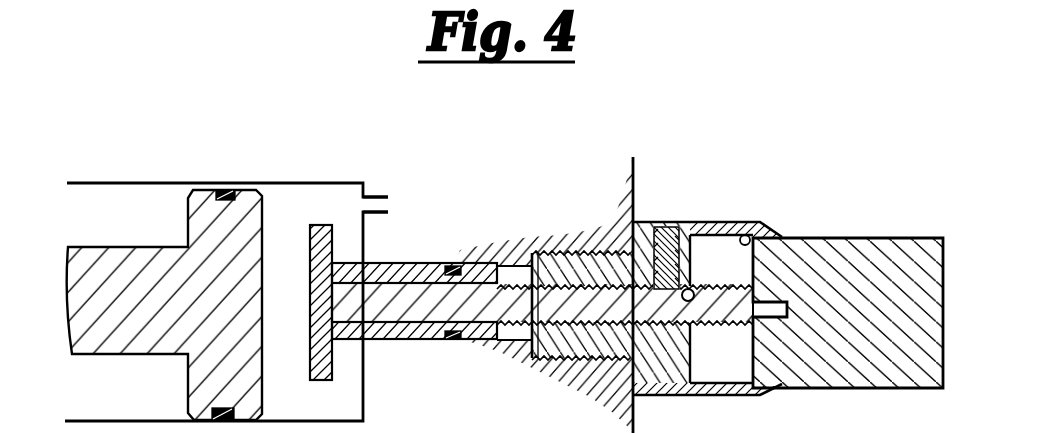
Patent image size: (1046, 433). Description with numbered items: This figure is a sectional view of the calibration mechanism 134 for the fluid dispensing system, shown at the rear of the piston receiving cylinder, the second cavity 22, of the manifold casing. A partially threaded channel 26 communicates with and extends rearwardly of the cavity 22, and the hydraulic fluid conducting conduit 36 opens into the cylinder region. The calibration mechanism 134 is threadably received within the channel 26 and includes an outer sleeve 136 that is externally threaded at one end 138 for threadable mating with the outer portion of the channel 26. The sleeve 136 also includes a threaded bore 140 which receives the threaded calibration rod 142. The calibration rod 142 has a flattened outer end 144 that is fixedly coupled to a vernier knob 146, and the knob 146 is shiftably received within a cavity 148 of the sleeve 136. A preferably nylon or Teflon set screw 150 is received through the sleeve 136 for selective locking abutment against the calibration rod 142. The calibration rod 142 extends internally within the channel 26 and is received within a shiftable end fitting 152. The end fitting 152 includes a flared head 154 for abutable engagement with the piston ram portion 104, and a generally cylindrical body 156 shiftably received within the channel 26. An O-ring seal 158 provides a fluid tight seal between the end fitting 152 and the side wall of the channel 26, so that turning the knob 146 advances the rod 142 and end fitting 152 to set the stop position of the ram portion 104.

The second cavity 22 is at (102, 195).
The partially threaded channel 26 is at (520, 262).
The hydraulic fluid conducting conduit 36 is at (382, 200).
The first ram portion 104 is at (157, 242).
The calibration mechanism 134 is at (522, 152).
The outer sleeve 136 is at (663, 395).
The externally threaded end 138 is at (580, 247).
The threaded bore 140 is at (695, 248).
The calibration rod 142 is at (720, 325).
The flattened outer end 144 is at (780, 303).
The vernier knob 146 is at (883, 377).
The cavity 148 is at (758, 225).
The set screw 150 is at (672, 232).
The end fitting 152 is at (402, 347).
The flared head 154 is at (322, 225).
The cylindrical body 156 is at (408, 268).
The O-ring seal 158 is at (457, 265).